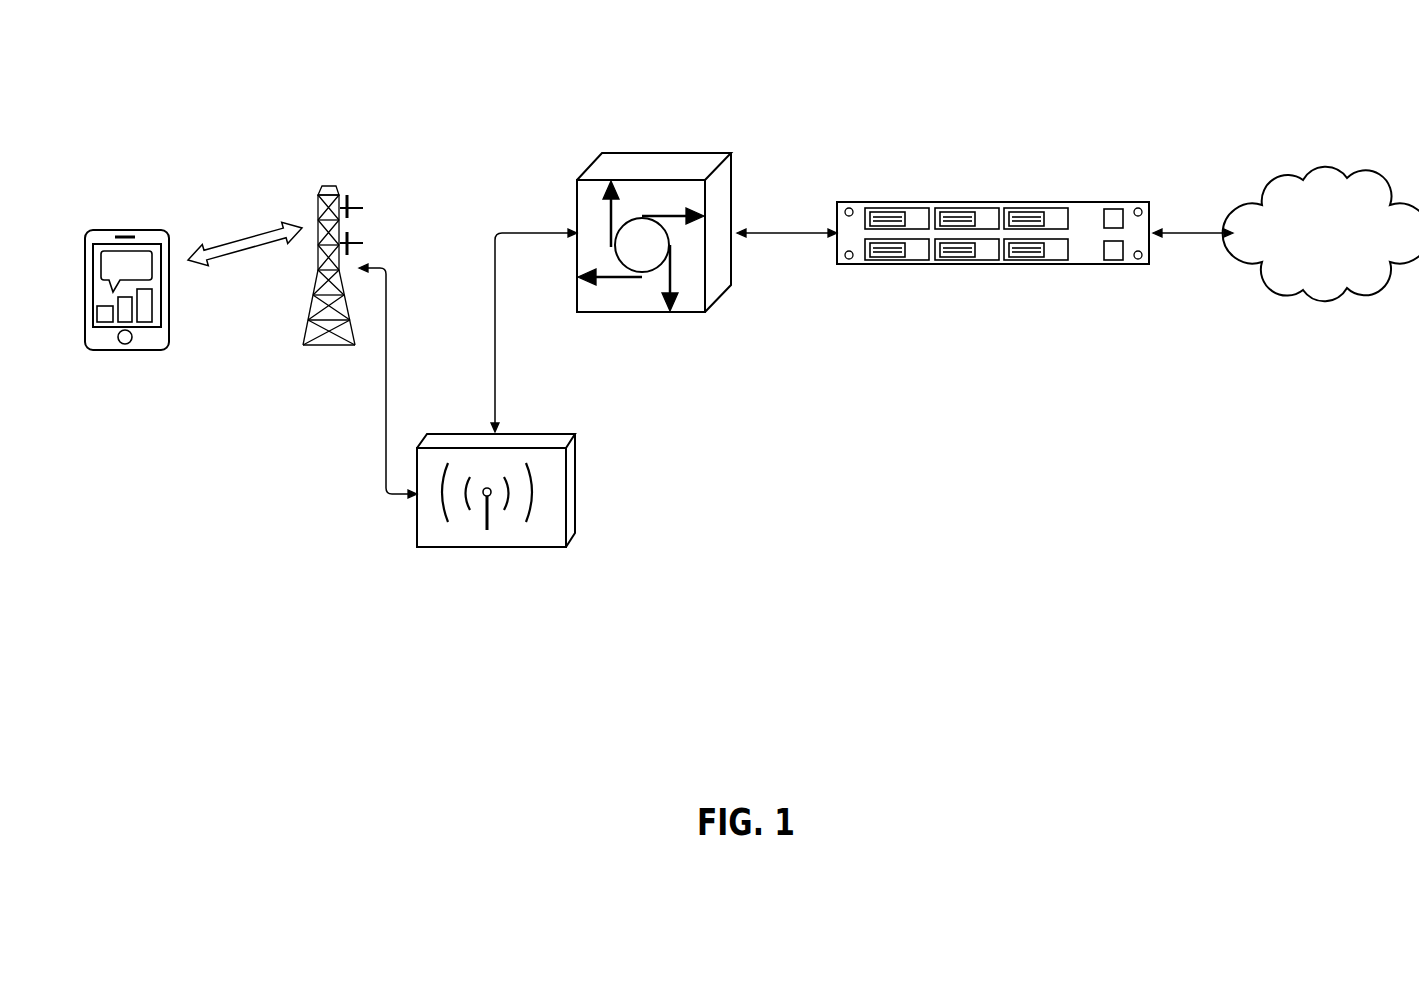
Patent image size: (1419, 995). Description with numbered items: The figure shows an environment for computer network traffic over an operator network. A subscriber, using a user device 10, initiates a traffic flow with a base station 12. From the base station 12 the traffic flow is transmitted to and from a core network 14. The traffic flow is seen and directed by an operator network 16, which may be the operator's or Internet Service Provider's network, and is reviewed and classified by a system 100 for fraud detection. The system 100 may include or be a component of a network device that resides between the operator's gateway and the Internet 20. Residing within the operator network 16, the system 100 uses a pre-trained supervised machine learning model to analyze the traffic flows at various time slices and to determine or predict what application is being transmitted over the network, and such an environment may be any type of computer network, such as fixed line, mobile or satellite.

The user device 10 is at (123, 230).
The base station 12 is at (328, 186).
The core network 14 is at (552, 476).
The operator network 16 is at (655, 165).
The system 100 is at (960, 200).
The Internet 20 is at (1280, 192).